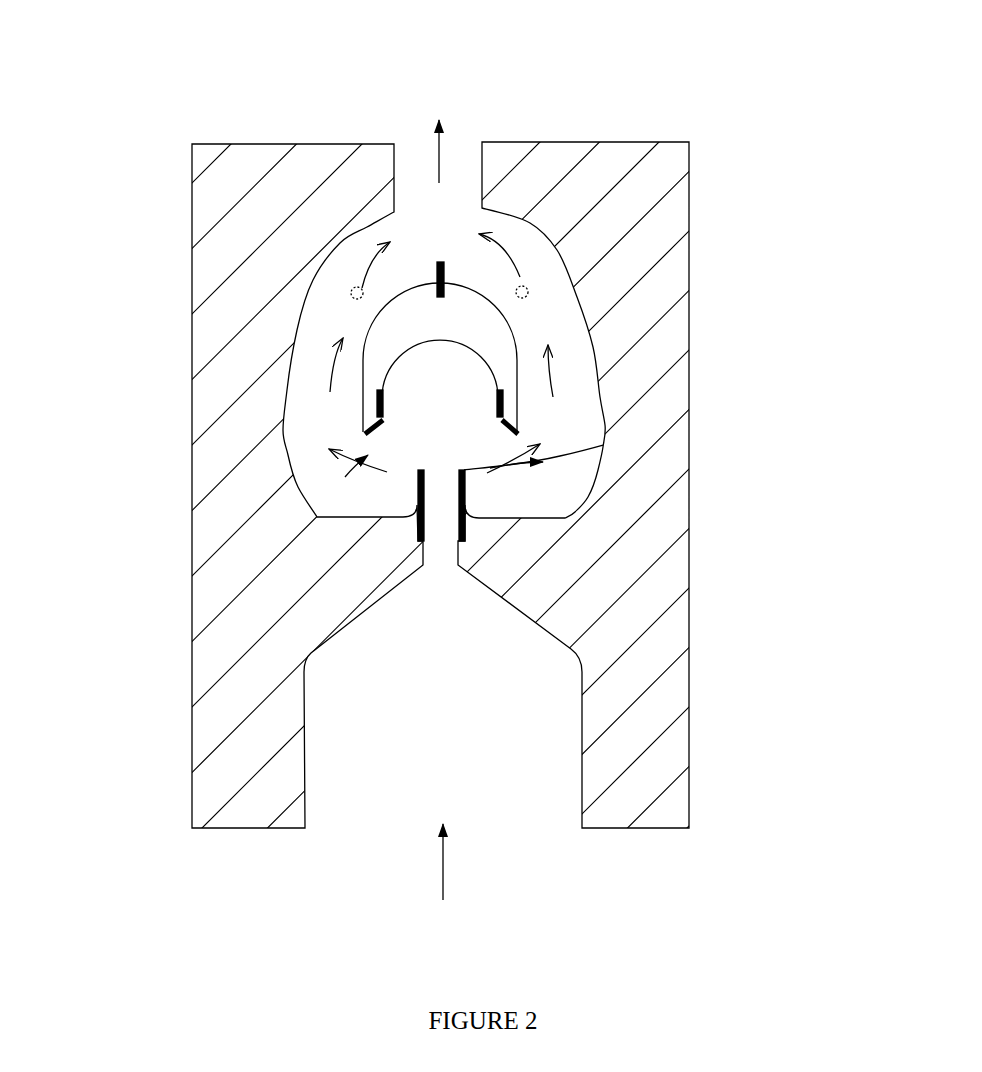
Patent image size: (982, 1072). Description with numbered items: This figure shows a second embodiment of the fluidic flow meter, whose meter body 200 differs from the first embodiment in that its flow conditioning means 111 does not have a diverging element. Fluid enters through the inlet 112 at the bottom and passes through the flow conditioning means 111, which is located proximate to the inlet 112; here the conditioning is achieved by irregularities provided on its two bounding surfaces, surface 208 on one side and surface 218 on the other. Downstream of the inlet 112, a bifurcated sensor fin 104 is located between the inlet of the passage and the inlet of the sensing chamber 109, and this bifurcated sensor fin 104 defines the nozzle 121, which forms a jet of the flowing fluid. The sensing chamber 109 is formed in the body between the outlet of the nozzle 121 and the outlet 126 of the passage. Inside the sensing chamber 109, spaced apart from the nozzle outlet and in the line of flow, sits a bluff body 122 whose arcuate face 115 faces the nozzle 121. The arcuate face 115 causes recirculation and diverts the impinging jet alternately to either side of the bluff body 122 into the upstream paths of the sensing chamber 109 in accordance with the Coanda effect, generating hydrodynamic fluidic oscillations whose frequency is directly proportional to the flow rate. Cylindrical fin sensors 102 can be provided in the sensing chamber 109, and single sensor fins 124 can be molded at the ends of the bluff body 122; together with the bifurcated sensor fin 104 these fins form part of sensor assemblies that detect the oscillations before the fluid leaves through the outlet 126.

The meter body 200 is at (543, 138).
The outlet 126 is at (440, 114).
The inlet 112 is at (440, 877).
The cylindrical fin sensors 102 is at (363, 289).
The bifurcated sensor fin 104 is at (453, 478).
The sensor fins 124 is at (383, 409).
The bluff body 122 is at (484, 335).
The arcuate face 115 is at (436, 349).
The nozzle 121 is at (453, 494).
The surface 208 is at (361, 613).
The surface 218 is at (519, 610).
The sensing chamber 109 is at (366, 456).
The flow conditioning means 111 is at (442, 649).